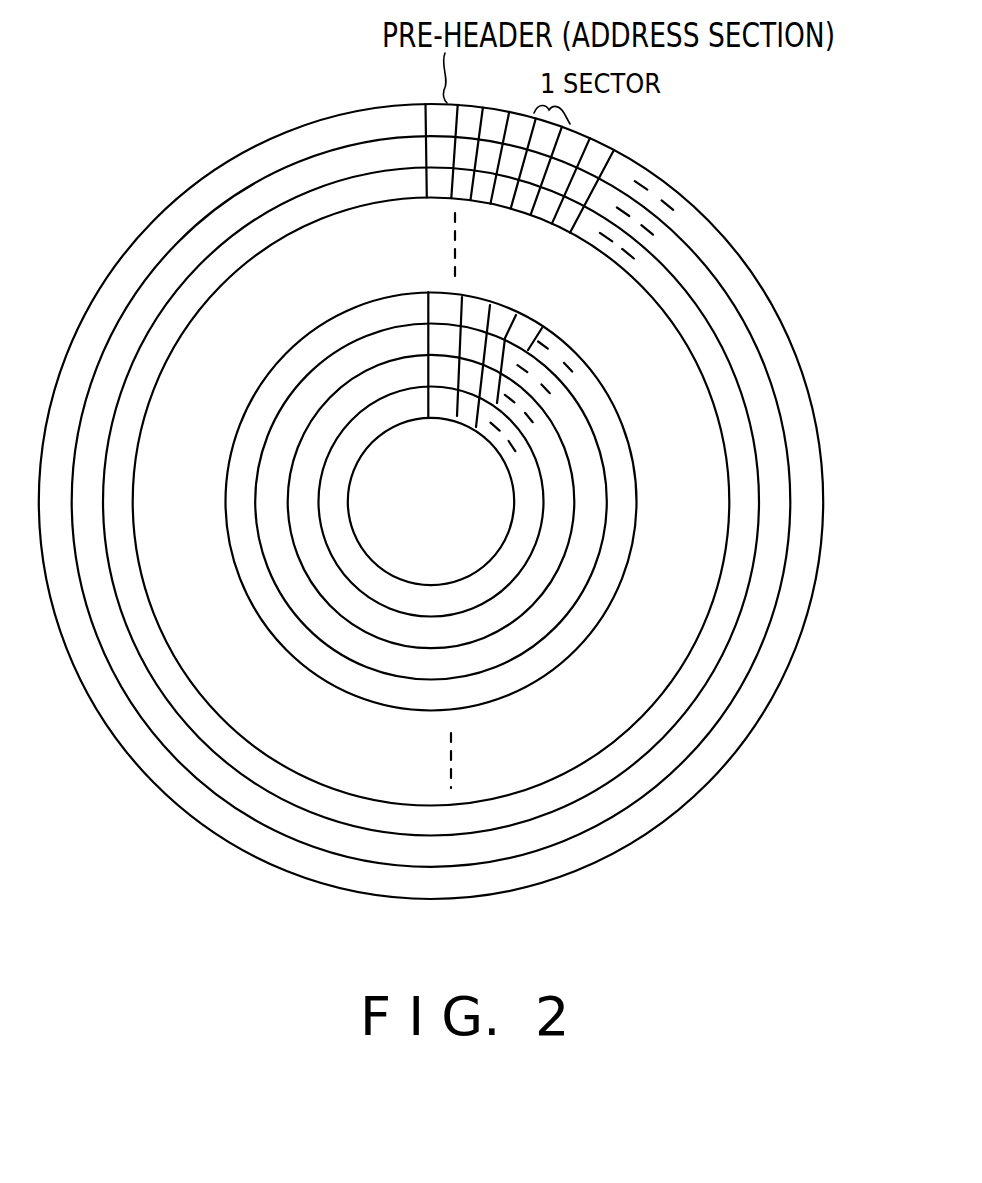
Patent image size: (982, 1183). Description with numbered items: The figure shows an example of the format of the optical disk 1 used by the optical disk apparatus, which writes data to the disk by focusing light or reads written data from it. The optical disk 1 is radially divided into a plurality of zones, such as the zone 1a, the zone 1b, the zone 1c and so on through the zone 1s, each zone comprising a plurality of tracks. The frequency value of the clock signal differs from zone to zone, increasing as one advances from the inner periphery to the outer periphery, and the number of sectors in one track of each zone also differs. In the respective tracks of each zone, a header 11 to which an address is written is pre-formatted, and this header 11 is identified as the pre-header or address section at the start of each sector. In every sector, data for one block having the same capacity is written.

The optical disk 1 is at (682, 194).
The zone 1a is at (742, 280).
The zone 1b is at (748, 367).
The zone 1c is at (740, 462).
The header 11 is at (450, 443).
The zone 1s is at (482, 578).